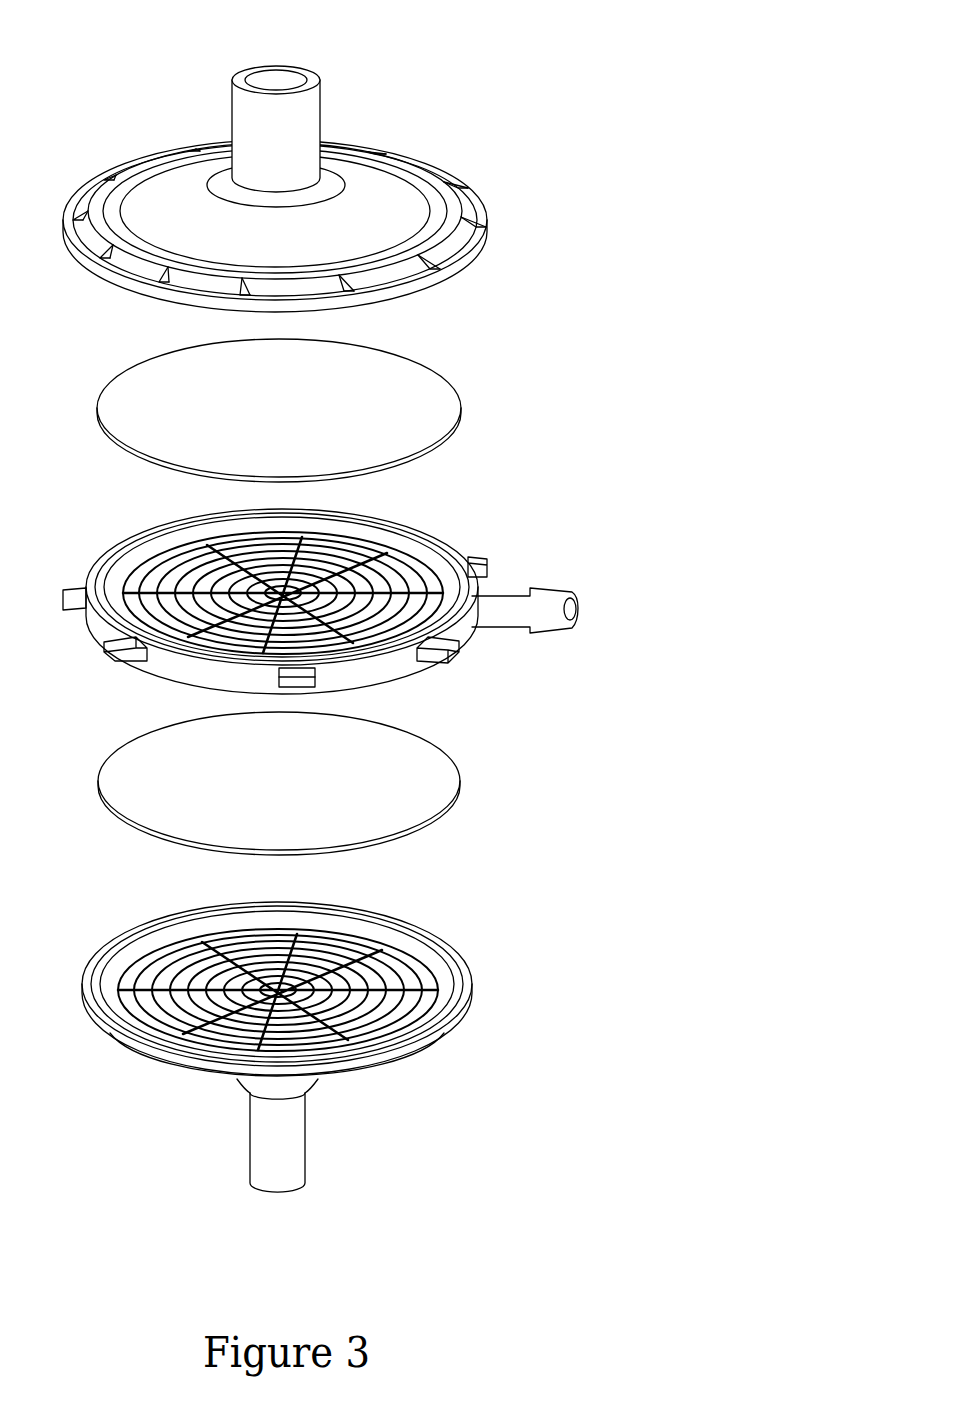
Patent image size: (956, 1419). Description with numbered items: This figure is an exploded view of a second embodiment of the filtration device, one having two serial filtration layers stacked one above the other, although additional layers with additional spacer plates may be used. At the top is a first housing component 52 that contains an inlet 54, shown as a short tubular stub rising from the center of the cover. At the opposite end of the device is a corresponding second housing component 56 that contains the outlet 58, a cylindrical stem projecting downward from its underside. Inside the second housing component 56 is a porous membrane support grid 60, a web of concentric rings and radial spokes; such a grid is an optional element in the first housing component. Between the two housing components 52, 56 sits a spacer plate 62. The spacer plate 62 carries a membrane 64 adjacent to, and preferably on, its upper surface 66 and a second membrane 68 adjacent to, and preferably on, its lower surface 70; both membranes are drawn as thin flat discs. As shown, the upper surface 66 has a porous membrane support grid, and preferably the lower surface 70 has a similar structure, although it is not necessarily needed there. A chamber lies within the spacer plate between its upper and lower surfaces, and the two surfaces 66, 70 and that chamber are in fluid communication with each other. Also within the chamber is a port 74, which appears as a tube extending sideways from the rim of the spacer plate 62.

The first housing component 52 is at (333, 162).
The inlet 54 is at (305, 128).
The second housing component 56 is at (364, 1047).
The outlet 58 is at (290, 1147).
The porous membrane support grid 60 is at (407, 953).
The spacer plate 62 is at (383, 599).
The membrane 64 is at (380, 408).
The upper surface 66 is at (389, 570).
The second membrane 68 is at (373, 801).
The lower surface 70 is at (413, 666).
The port 74 is at (552, 623).